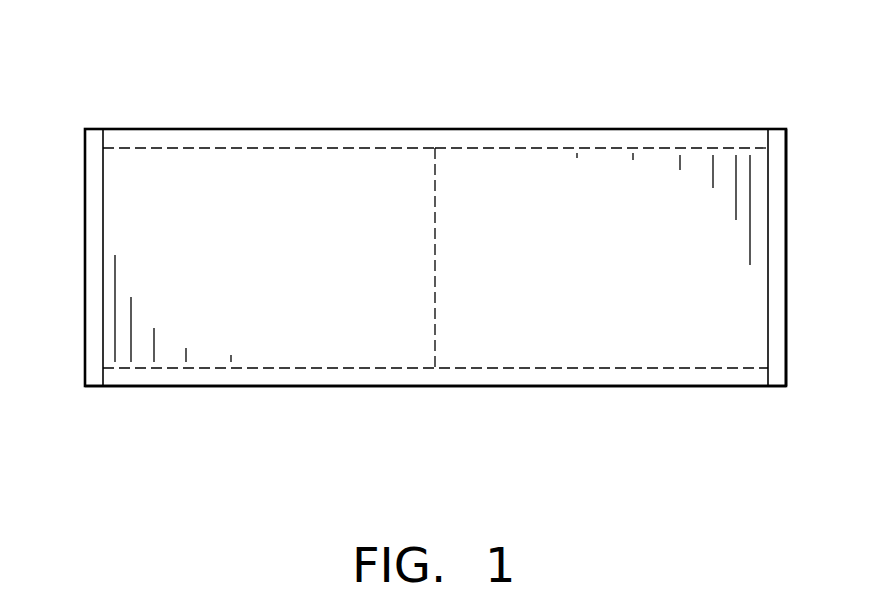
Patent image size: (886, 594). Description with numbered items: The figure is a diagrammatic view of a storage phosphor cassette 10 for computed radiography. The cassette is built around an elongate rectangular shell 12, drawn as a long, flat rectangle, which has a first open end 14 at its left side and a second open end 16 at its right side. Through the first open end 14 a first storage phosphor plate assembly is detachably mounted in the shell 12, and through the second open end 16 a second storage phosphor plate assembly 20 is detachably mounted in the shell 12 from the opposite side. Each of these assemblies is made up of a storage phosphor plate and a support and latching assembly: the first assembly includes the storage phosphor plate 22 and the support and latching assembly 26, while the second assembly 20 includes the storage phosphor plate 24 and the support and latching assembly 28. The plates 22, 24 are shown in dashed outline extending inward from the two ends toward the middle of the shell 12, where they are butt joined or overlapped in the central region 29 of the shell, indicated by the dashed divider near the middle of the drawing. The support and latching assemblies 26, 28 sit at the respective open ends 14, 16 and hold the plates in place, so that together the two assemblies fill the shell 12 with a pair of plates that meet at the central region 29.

The storage phosphor cassette 10 is at (416, 90).
The elongate rectangular shell 12 is at (253, 388).
The first open end 14 is at (103, 237).
The second open end 16 is at (770, 345).
The second storage phosphor plate assembly 20 is at (792, 325).
The storage phosphor plate 22 is at (247, 152).
The storage phosphor plate 24 is at (527, 150).
The support and latching assembly 26 is at (84, 178).
The support and latching assembly 28 is at (786, 169).
The central region 29 is at (405, 403).